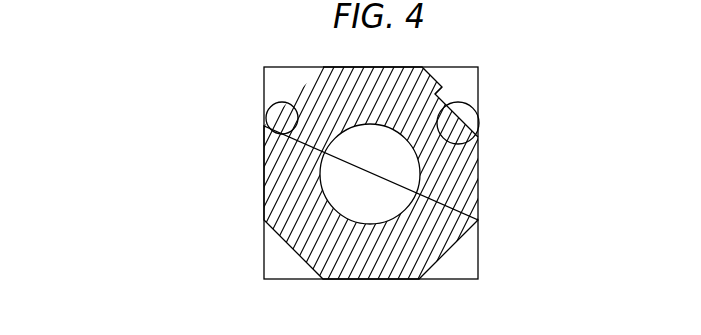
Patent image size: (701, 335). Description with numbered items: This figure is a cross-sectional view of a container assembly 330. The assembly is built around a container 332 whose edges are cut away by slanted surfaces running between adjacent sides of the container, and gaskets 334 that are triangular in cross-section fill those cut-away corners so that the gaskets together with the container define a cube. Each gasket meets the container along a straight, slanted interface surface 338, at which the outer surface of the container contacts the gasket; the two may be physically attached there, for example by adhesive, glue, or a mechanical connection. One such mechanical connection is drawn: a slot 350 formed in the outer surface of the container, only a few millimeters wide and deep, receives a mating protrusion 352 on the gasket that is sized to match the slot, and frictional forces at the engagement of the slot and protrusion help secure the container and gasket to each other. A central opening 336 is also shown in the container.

The container assembly 330 is at (221, 159).
The container 332 is at (465, 176).
The gaskets 334 is at (270, 85).
The central aperture 336 is at (352, 184).
The interface surface 338 is at (270, 140).
The slot 350 is at (463, 143).
The protrusion 352 is at (448, 95).